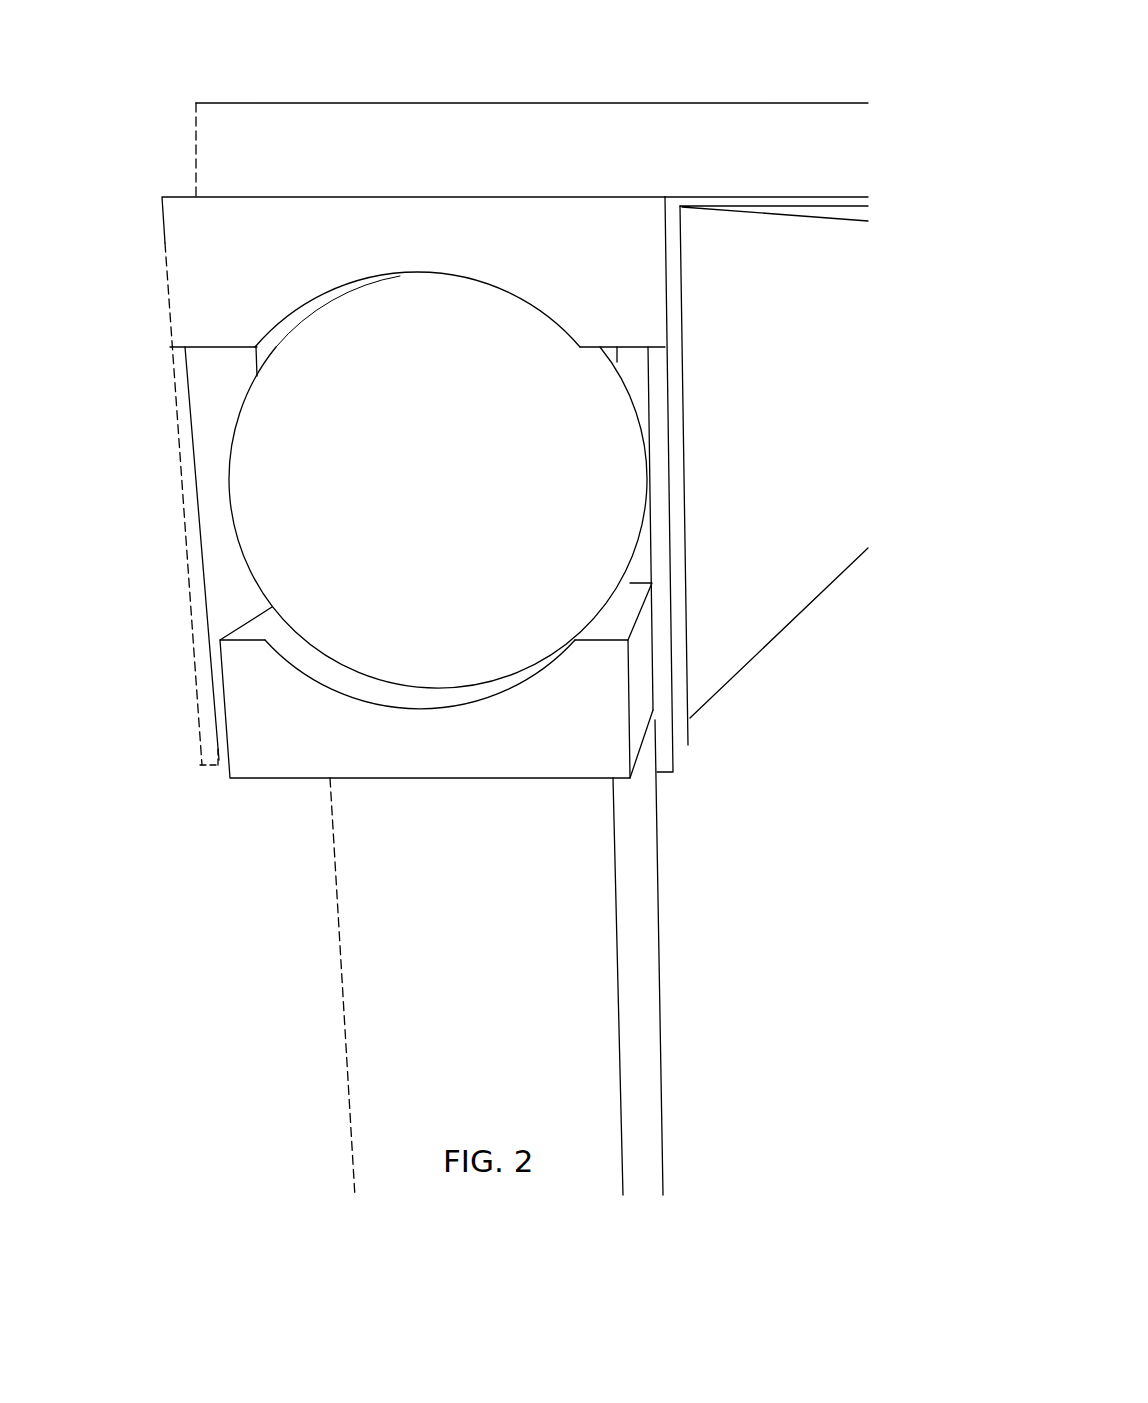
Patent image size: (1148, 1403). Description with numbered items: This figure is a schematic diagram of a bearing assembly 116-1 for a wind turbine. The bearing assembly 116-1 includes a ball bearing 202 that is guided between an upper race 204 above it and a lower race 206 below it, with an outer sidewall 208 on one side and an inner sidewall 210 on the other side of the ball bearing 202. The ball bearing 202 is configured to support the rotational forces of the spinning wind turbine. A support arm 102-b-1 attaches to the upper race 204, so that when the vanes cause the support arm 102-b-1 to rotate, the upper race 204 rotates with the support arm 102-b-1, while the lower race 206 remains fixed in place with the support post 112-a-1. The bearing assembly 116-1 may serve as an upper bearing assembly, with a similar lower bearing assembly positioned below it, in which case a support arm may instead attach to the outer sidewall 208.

The support arm 102-b-1 is at (820, 125).
The bearing assembly 116-1 is at (393, 696).
The ball bearing 202 is at (488, 340).
The upper race 204 is at (187, 243).
The lower race 206 is at (291, 749).
The outer sidewall 208 is at (176, 402).
The inner sidewall 210 is at (670, 740).
The support post 112-a-1 is at (362, 901).